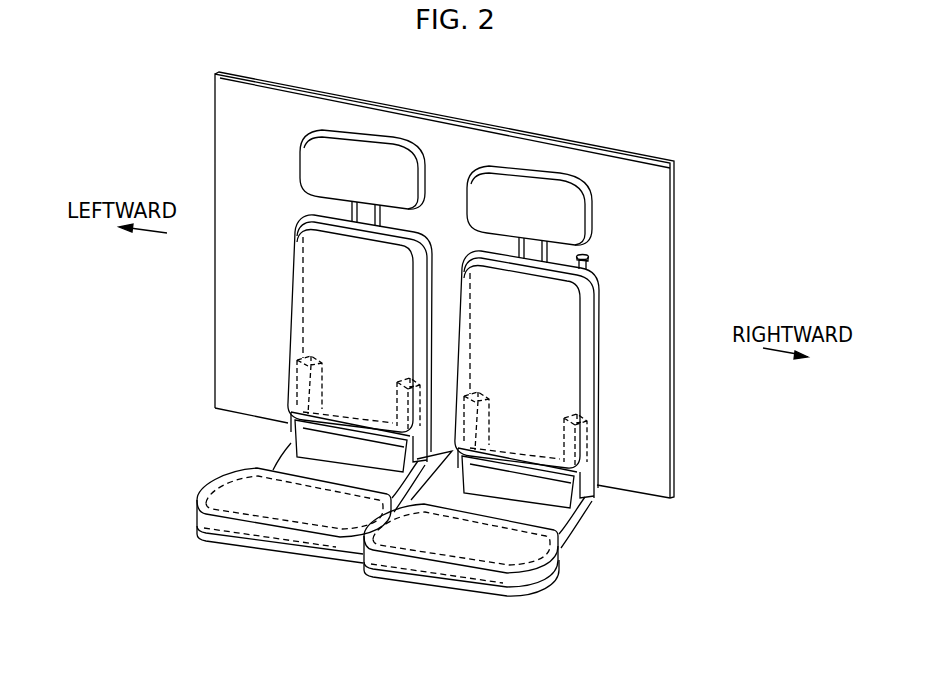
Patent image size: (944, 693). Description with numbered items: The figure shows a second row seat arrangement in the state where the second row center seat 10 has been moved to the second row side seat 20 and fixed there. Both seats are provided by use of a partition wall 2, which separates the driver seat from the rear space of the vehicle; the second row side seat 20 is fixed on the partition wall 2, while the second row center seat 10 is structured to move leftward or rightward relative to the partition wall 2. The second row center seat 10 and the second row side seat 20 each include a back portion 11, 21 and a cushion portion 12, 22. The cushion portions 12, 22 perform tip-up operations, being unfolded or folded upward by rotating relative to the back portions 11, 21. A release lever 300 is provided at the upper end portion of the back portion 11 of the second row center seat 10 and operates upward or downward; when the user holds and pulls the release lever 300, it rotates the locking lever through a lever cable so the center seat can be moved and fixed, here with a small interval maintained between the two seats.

The partition wall 2 is at (228, 162).
The second row center seat 10 is at (571, 405).
The back portion 11 is at (557, 389).
The cushion portion 12 is at (448, 540).
The second row side seat 20 is at (280, 371).
The back portion 21 is at (332, 291).
The cushion portion 22 is at (280, 507).
The release lever 300 is at (588, 257).